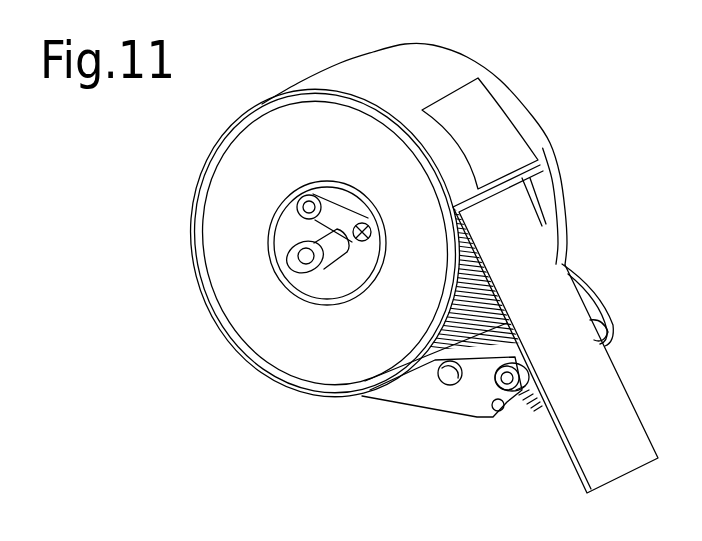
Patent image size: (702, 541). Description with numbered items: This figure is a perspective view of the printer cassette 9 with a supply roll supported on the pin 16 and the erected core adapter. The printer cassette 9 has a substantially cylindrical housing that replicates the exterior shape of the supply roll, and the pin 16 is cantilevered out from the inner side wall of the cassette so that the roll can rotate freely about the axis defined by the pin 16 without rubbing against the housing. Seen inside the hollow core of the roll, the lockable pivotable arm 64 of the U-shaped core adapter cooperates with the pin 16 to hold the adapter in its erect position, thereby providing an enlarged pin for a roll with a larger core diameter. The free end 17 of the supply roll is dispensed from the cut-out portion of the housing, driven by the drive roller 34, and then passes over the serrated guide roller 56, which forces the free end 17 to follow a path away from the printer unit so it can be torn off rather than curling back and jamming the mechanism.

The printer cassette 9 is at (169, 245).
The pin 16 is at (327, 262).
The free end of the supply roll 17 is at (618, 449).
The drive roller 34 is at (506, 414).
The guide roller 56 is at (536, 410).
The lockable pivotable arm 64 is at (340, 222).